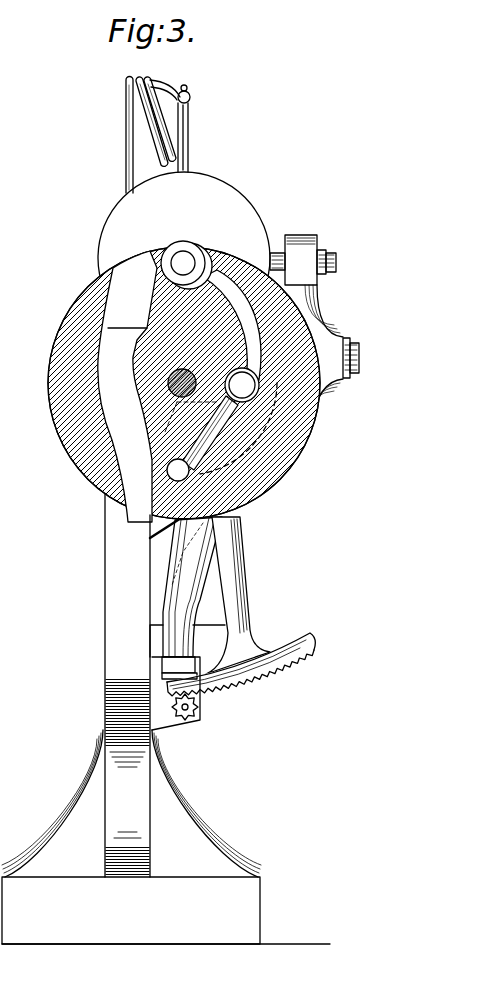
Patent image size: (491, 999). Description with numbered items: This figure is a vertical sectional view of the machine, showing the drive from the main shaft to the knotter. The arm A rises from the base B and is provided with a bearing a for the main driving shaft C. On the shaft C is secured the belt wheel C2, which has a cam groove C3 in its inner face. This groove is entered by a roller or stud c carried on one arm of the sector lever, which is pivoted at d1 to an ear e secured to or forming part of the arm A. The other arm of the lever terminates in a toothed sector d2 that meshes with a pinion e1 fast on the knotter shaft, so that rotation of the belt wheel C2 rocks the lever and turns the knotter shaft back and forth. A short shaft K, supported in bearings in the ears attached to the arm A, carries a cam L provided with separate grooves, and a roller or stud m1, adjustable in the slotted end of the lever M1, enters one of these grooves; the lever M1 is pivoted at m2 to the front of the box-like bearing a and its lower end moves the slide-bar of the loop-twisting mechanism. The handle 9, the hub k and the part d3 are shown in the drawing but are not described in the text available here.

The handle 9 is at (130, 110).
The cam L is at (224, 194).
The short shaft K is at (210, 243).
The hub k is at (183, 245).
The roller or stud m1 is at (336, 261).
The pivot m2 is at (360, 353).
The main driving shaft C is at (250, 332).
The roller or stud c is at (243, 383).
The belt wheel C2 is at (65, 354).
The cam groove C3 is at (120, 385).
The pivot d1 is at (108, 493).
The ear e is at (172, 524).
The arm A is at (106, 578).
The lever M1 is at (238, 523).
The bearing a is at (226, 578).
The toothed sector d2 is at (312, 638).
The column screw thread d3 is at (108, 777).
The pinion e1 is at (197, 707).
The base B is at (180, 818).